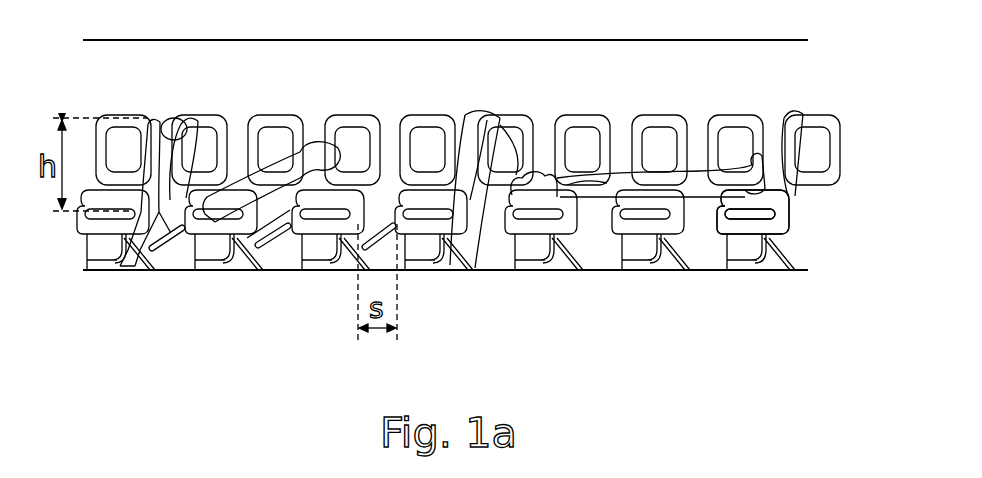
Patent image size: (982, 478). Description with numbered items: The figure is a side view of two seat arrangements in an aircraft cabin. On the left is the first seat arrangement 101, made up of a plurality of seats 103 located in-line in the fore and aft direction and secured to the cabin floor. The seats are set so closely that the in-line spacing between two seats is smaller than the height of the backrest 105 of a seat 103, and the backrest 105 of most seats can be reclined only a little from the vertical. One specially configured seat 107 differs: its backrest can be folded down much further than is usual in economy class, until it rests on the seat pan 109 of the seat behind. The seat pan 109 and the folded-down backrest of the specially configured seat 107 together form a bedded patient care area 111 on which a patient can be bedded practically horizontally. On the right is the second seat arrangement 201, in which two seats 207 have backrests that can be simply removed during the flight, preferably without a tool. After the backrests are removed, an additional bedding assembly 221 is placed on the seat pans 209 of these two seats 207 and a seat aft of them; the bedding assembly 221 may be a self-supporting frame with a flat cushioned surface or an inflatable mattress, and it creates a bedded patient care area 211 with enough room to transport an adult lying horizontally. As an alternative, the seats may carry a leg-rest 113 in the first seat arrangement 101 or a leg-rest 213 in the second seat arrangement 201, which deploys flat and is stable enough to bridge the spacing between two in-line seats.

The backrest 105 is at (152, 126).
The seat 103 is at (127, 273).
The leg-rest 113 is at (163, 240).
The bedded patient care area 111 is at (240, 230).
The specially configured seat 107 is at (217, 275).
The first seat arrangement 101 is at (283, 285).
The seat pan 109 is at (323, 230).
The seat pan 209 is at (545, 232).
The bedded patient care area 211 is at (583, 203).
The leg-rest 213 is at (657, 282).
The second seat arrangement 201 is at (659, 266).
The seat 207 is at (620, 210).
The bedding assembly 221 is at (703, 212).